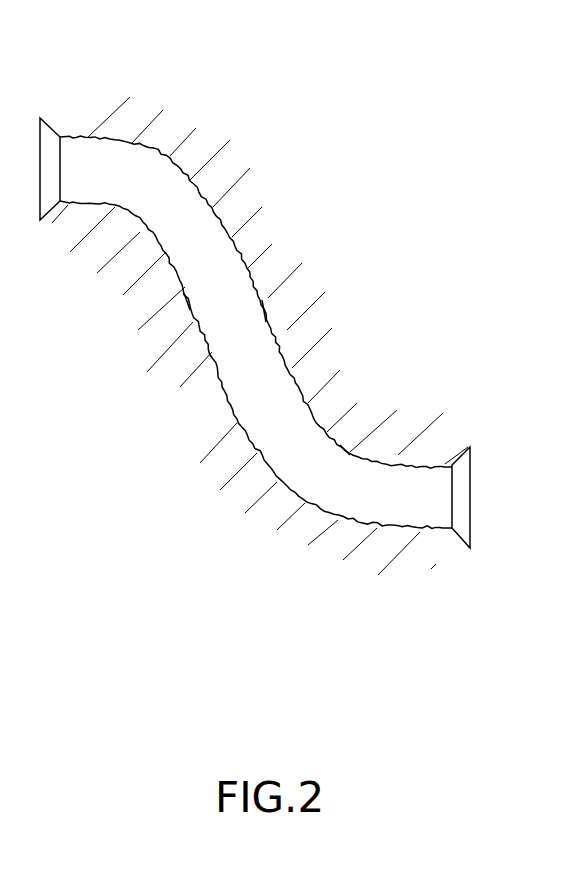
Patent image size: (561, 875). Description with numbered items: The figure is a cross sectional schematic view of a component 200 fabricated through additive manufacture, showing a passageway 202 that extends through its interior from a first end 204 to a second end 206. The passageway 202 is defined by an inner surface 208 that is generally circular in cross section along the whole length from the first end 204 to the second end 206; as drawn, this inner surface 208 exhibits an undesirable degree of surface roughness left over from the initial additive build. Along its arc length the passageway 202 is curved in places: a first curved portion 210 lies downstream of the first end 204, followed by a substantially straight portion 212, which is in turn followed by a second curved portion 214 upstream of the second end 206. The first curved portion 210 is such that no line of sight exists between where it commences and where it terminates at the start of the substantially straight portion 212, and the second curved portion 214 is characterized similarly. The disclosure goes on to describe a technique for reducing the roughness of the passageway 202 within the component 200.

The component 200 is at (258, 333).
The passageway 202 is at (265, 311).
The first end 204 is at (60, 137).
The second end 206 is at (452, 528).
The inner surface 208 is at (225, 395).
The first curved portion 210 is at (178, 158).
The substantially straight portion 212 is at (187, 302).
The second curved portion 214 is at (345, 448).